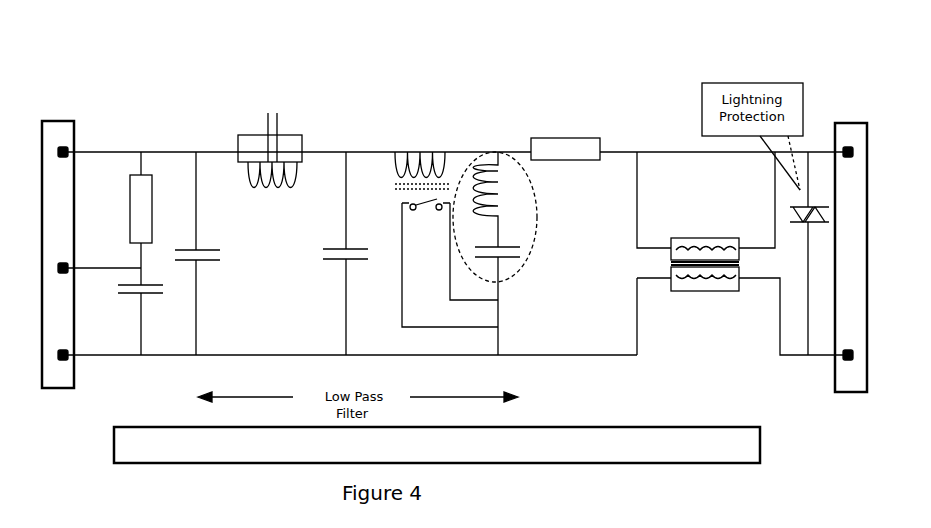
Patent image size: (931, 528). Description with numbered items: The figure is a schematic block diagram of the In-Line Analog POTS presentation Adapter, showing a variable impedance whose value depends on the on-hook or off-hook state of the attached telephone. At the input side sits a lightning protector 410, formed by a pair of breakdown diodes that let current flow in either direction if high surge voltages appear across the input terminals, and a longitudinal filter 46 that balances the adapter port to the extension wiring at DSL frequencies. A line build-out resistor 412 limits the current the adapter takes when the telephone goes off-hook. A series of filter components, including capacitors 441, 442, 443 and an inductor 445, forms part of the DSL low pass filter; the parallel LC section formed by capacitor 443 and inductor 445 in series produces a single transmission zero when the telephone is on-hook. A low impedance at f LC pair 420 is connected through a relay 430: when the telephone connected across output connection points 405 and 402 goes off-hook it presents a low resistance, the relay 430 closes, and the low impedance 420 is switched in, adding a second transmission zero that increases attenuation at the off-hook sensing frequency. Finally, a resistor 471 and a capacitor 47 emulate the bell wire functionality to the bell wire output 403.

The output connection point 405 is at (35, 154).
The bell wire output 403 is at (72, 269).
The output connection point 402 is at (35, 360).
The resistor 471 is at (128, 191).
The capacitor 47 is at (145, 297).
The capacitor 442 is at (210, 262).
The capacitor 441 is at (343, 263).
The capacitor 443 is at (278, 120).
The inductor 445 is at (258, 192).
The relay 430 is at (422, 135).
The low impedance at f LC pair 420 is at (518, 265).
The line build-out resistor 412 is at (537, 162).
The longitudinal filter 46 is at (728, 292).
The lightning protector 410 is at (810, 226).